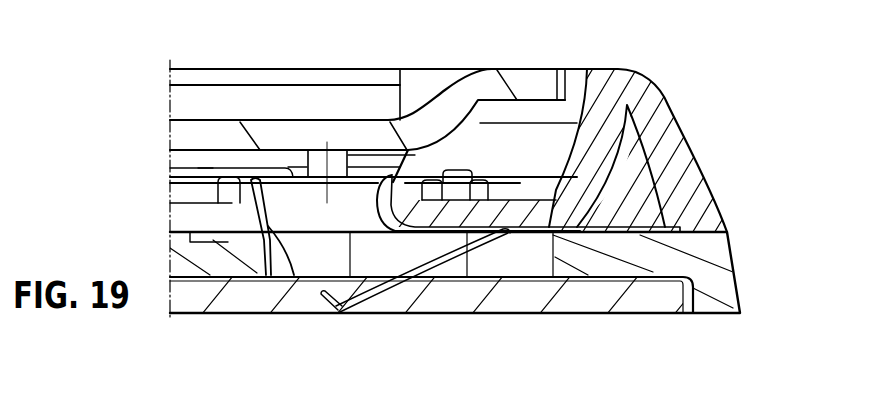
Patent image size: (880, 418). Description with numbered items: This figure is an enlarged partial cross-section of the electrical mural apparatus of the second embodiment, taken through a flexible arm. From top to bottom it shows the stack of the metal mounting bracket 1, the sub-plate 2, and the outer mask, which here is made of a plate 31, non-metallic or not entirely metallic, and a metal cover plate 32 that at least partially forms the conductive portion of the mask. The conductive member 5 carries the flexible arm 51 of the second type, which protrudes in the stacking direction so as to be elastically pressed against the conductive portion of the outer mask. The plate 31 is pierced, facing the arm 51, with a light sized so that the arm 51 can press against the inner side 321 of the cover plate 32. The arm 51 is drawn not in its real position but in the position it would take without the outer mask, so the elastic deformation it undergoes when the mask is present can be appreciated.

The metal mounting bracket 1 is at (311, 137).
The sub-plate 2 is at (632, 96).
The conductive member 5 is at (642, 208).
The plate 31 is at (718, 275).
The metal cover plate 32 is at (557, 300).
The inner side of the cover plate 321 is at (268, 226).
The flexible arm of the second type 51 is at (407, 290).